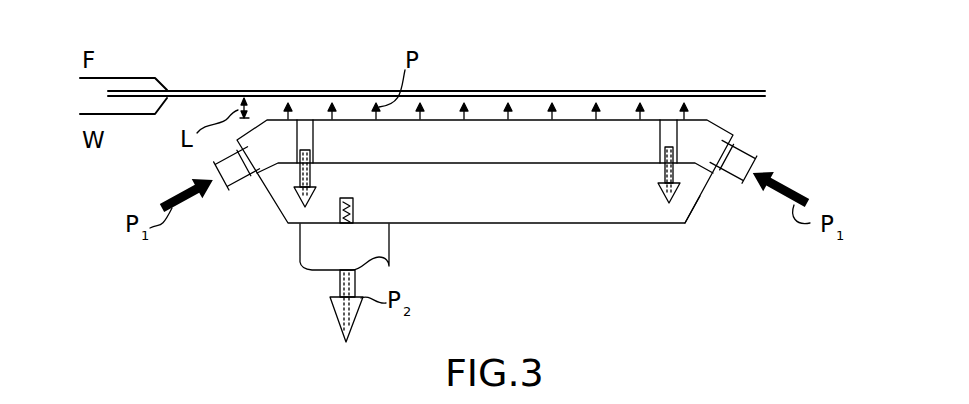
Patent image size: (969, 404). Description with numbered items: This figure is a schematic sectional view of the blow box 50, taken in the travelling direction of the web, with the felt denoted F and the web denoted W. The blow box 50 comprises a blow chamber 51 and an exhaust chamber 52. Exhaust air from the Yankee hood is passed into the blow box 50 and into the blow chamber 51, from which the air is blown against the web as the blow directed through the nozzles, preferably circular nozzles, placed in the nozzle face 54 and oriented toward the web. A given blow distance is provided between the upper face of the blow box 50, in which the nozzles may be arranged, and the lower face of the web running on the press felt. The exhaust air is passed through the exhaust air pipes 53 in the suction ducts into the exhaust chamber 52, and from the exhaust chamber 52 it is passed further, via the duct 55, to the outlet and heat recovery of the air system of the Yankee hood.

The blow box 50 is at (588, 241).
The blow chamber 51 is at (737, 131).
The exhaust chamber 52 is at (684, 217).
The exhaust air pipes 53 is at (300, 158).
The nozzle face 54 is at (525, 114).
The duct 55 is at (312, 248).